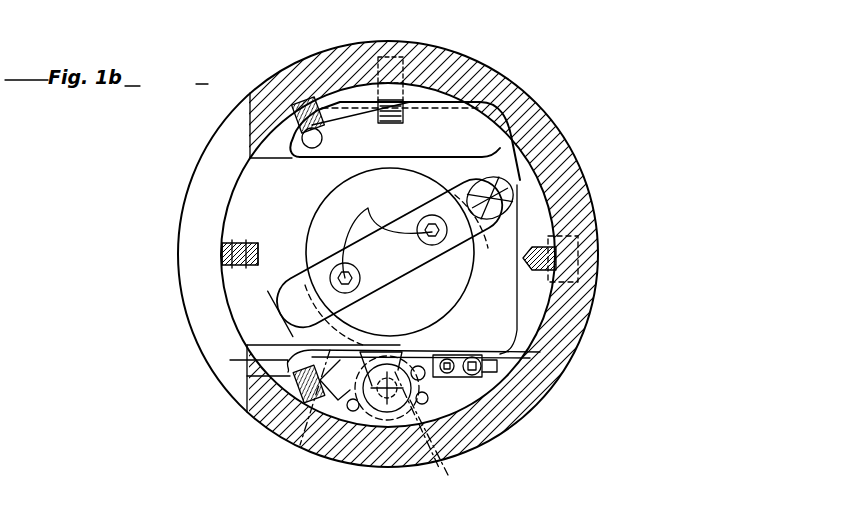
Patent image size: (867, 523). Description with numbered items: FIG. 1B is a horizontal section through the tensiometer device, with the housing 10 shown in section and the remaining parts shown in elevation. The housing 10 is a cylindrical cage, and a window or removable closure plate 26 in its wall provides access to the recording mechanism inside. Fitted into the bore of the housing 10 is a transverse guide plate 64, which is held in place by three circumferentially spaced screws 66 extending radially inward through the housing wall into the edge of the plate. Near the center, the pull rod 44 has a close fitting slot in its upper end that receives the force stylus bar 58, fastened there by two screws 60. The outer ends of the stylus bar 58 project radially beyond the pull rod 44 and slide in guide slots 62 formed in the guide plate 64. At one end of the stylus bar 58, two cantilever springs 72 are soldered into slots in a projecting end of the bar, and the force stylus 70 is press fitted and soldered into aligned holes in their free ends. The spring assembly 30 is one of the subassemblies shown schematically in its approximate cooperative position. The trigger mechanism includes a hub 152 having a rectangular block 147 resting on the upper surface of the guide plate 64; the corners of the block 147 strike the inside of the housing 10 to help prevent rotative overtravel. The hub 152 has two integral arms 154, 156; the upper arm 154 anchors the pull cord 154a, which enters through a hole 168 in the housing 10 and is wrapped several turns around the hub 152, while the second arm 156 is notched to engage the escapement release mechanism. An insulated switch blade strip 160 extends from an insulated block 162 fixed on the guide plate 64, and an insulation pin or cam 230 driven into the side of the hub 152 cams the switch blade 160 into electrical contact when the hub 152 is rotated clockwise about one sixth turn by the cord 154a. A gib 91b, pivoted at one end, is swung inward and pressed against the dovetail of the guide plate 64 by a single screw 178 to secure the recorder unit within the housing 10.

The housing 10 is at (583, 318).
The removable closure plate 26 is at (193, 168).
The screws 66 is at (265, 434).
The screw 178 is at (405, 65).
The gib 91b is at (530, 97).
The guide plate 64 is at (512, 276).
The pull rod 44 is at (330, 208).
The guide slots 62 is at (560, 152).
The cantilever springs 72 is at (520, 200).
The force stylus 70 is at (525, 216).
The screws 60 is at (368, 210).
The force stylus bar 58 is at (428, 262).
The spring assembly 30 is at (480, 312).
The arm 156 is at (378, 333).
The rectangular block 147 is at (357, 410).
The insulated block 162 is at (500, 368).
The hub 152 is at (440, 485).
The arm 154 is at (290, 465).
The insulation pin or cam 230 is at (318, 468).
The pull cord 154a is at (446, 476).
The hole 168 is at (452, 462).
The switch blade strip 160 is at (247, 378).